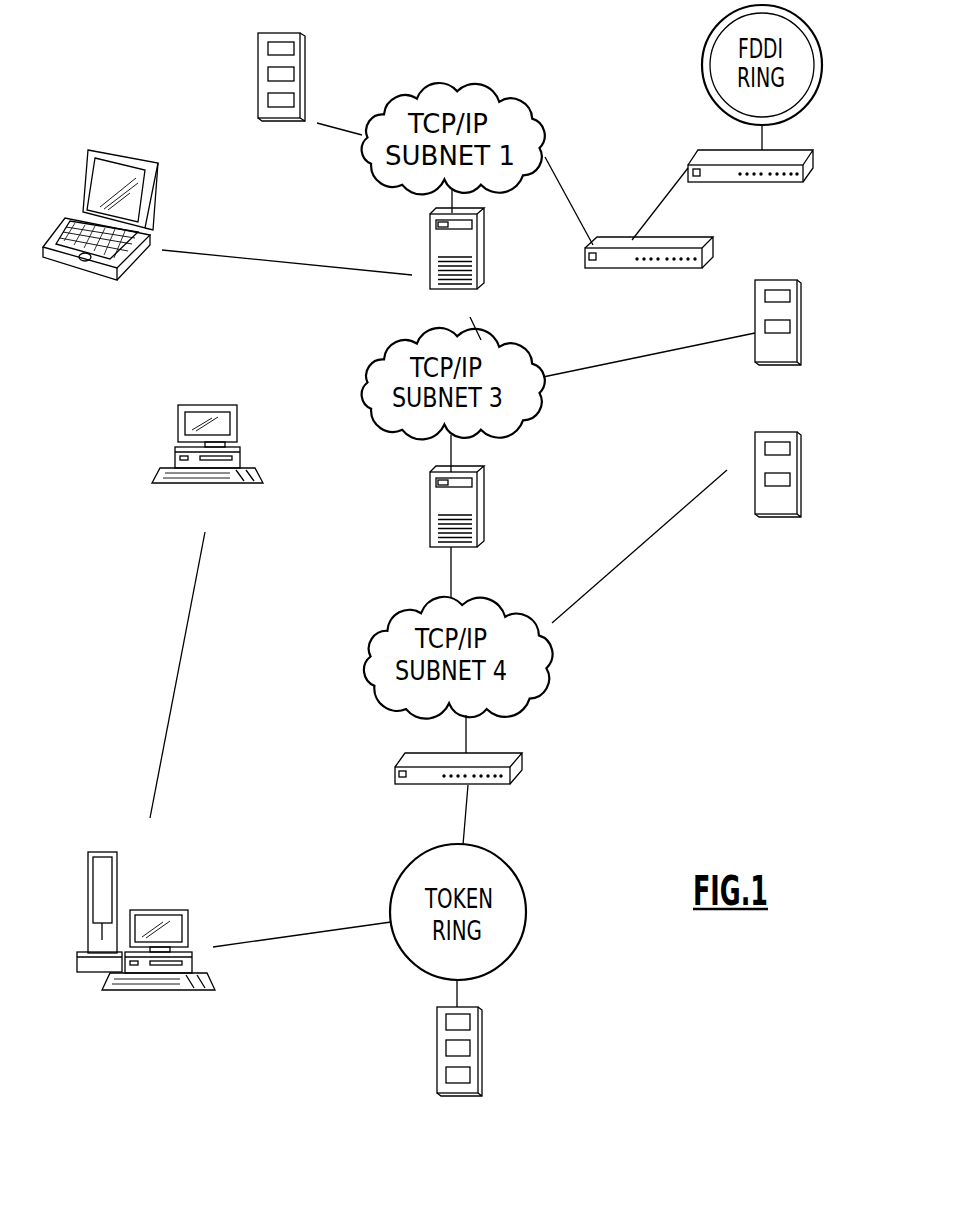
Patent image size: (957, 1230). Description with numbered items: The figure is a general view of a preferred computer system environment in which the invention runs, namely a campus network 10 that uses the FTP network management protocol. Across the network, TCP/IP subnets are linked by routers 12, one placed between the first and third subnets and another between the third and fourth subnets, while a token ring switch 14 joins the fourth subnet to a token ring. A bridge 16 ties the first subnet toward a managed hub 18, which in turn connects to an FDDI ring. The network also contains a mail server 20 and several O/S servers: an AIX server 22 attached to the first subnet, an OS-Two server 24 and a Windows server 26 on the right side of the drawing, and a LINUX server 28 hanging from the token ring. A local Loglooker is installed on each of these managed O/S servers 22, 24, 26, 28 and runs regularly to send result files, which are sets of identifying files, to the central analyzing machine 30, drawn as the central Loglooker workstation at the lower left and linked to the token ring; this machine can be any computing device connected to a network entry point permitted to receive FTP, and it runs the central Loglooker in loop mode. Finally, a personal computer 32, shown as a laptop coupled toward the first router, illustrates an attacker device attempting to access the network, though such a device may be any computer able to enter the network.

The campus network 10 is at (740, 696).
The routers 12 is at (481, 272).
The token ring switch 14 is at (515, 767).
The bridge 16 is at (692, 270).
The managed hubs 18 is at (688, 168).
The mail server 20 is at (238, 428).
The AIX server 22 is at (307, 80).
The OS/2 server 24 is at (802, 323).
The Windows server 26 is at (802, 478).
The LINUX server 28 is at (483, 1050).
The central analyzing machine 30 is at (147, 897).
The personal computer 32 is at (130, 152).